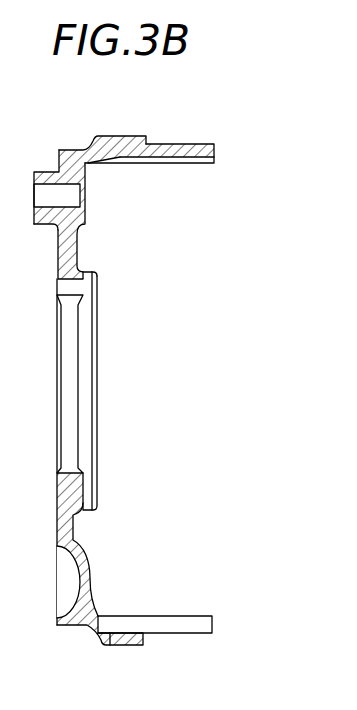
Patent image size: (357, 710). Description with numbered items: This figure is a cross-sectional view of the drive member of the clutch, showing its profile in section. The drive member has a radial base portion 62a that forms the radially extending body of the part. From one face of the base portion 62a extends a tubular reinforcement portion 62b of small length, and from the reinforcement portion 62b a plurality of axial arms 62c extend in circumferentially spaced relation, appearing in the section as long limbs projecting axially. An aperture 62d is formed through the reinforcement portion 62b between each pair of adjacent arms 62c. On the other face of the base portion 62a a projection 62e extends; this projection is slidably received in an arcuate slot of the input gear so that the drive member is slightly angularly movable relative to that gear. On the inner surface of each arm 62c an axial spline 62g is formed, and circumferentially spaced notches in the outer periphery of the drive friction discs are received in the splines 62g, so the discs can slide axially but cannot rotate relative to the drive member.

The radial base portion 62a is at (58, 237).
The tubular reinforcement portion 62b is at (122, 136).
The axial arm 62c is at (203, 144).
The aperture 62d is at (118, 645).
The projection 62e is at (43, 172).
The axial spline 62g is at (158, 163).